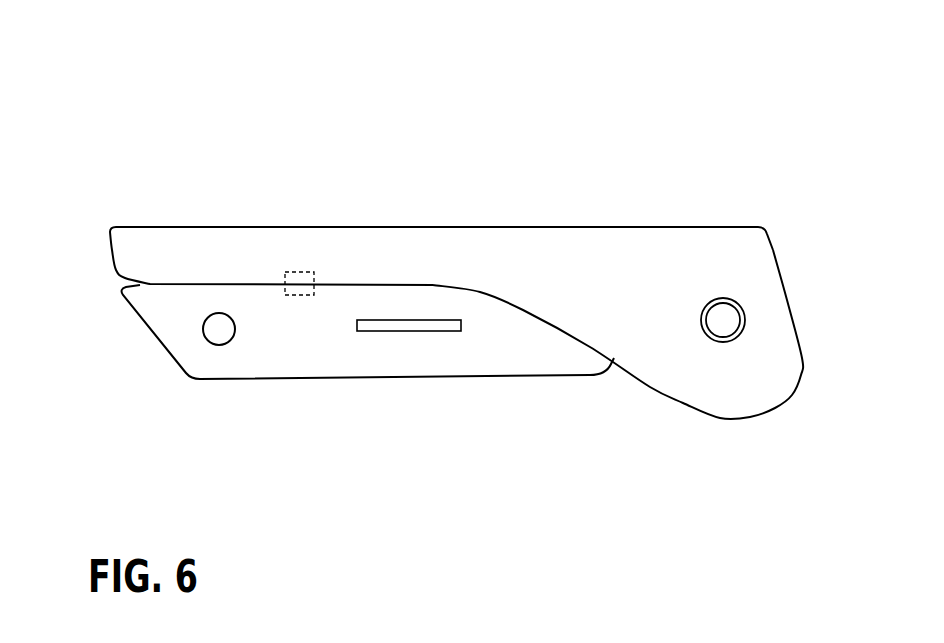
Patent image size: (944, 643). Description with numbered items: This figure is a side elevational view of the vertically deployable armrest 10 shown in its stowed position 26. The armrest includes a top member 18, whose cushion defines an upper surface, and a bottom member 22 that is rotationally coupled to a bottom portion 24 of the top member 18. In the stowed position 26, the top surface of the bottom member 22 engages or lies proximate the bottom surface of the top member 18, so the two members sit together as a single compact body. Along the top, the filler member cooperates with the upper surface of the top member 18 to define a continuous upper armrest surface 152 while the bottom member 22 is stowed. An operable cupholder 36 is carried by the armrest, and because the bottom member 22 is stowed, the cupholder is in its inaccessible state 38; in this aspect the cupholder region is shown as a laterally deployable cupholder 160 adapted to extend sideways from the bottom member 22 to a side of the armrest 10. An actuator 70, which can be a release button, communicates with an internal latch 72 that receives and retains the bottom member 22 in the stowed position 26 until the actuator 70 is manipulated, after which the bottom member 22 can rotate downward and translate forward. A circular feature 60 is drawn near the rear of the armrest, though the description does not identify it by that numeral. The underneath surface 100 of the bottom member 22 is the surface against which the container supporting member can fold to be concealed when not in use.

The vertically deployable armrest 10 is at (473, 128).
The top member 18 is at (367, 244).
The bottom member 22 is at (363, 360).
The bottom portion 24 is at (327, 287).
The stowed position 26 is at (582, 392).
The operable cupholder 36 is at (403, 318).
The inaccessible state 38 is at (117, 331).
The pivot 60 is at (723, 298).
The actuator 70 is at (216, 313).
The internal latch 72 is at (298, 272).
The underneath surface 100 is at (208, 380).
The continuous upper armrest surface 152 is at (617, 227).
The laterally deployable cupholder 160 is at (435, 320).